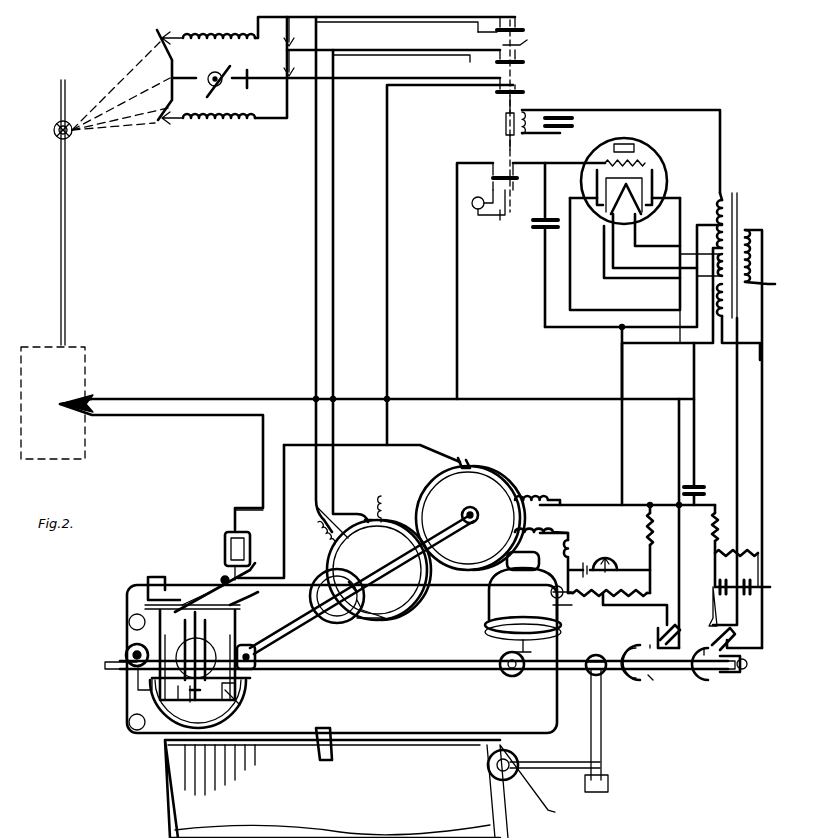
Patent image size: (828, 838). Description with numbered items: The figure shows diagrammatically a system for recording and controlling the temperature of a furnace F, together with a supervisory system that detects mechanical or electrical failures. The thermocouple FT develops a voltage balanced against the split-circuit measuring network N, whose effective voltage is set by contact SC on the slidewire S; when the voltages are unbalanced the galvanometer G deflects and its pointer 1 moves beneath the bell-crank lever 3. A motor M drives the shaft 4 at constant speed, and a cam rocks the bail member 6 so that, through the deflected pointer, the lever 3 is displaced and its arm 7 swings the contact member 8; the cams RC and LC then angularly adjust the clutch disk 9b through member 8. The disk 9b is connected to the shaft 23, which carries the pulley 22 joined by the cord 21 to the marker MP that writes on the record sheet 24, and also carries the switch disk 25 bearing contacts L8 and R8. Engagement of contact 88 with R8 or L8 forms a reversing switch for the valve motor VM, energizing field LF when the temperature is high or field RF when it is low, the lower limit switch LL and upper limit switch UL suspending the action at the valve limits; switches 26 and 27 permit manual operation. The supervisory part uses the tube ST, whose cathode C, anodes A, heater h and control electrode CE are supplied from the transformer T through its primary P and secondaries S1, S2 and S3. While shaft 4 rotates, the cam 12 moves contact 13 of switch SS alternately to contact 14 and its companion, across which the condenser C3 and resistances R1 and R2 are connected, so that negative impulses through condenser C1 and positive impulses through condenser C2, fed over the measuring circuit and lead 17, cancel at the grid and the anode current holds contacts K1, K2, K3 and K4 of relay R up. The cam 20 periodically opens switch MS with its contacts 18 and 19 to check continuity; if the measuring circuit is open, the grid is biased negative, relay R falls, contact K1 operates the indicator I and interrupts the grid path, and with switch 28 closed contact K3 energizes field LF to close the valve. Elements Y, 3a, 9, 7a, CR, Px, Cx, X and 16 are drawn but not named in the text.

The light source Y is at (70, 136).
The lower limit switch LL is at (160, 40).
The upper limit switch UL is at (172, 118).
The field coil LF is at (196, 34).
The field coil RF is at (212, 122).
The valve motor VM is at (224, 70).
The switch 26 is at (278, 31).
The switch 27 is at (285, 75).
The relay contact K3 is at (520, 27).
The switch 28 is at (530, 46).
The relay contact K4 is at (520, 63).
The relay contact K2 is at (522, 93).
The relay R is at (505, 125).
The tube ST is at (665, 165).
The control electrode CE is at (640, 148).
The anode A is at (678, 186).
The cathode C is at (661, 187).
The heater h is at (631, 195).
The transformer T is at (724, 195).
The secondary S2 is at (716, 218).
The secondary S3 is at (715, 262).
The secondary S1 is at (725, 304).
The primary P is at (760, 250).
The relay contact K1 is at (514, 180).
The indicator I is at (488, 205).
The condenser C1 is at (542, 226).
The lead 17 is at (458, 306).
The thermocouple FT is at (60, 400).
The furnace F is at (82, 368).
The cord 21 is at (435, 732).
The galvanometer G is at (224, 545).
The terminal 3a is at (232, 578).
The bell-crank lever 3 is at (152, 585).
The pointer 1 is at (210, 580).
The bail member 6 is at (247, 595).
The lever 9 is at (191, 656).
The arm 7 is at (178, 706).
The pin 7a is at (199, 697).
The clutch disk 9b is at (214, 705).
The contact member 8 is at (238, 695).
The cam LC is at (126, 648).
The shaft 4 is at (427, 677).
The cam RC is at (355, 592).
The shaft 23 is at (307, 610).
The pulley 22 is at (360, 612).
The contact L8 is at (385, 522).
The contact 88 is at (360, 512).
The contact R8 is at (322, 520).
The slidewire resistance S is at (505, 470).
The contact SC is at (462, 458).
The switch disk 25 is at (448, 600).
The motor M is at (488, 602).
The marker MP is at (330, 730).
The record sheet 24 is at (175, 785).
The control relay CR is at (615, 562).
The measuring network N is at (617, 602).
The condenser C2 is at (698, 488).
The resistance R1 is at (702, 546).
The resistance R2 is at (694, 571).
The resistor Px is at (736, 560).
The condenser C3 is at (742, 579).
The condenser Cx is at (746, 579).
The terminal X is at (702, 587).
The contact 18 is at (658, 629).
The switch MS is at (645, 648).
The cam 20 is at (646, 680).
The contact 14 is at (706, 607).
The contact 13 is at (725, 472).
The contact arm 16 is at (737, 639).
The switch SS is at (695, 656).
The contact 19 is at (696, 656).
The cam 12 is at (712, 678).